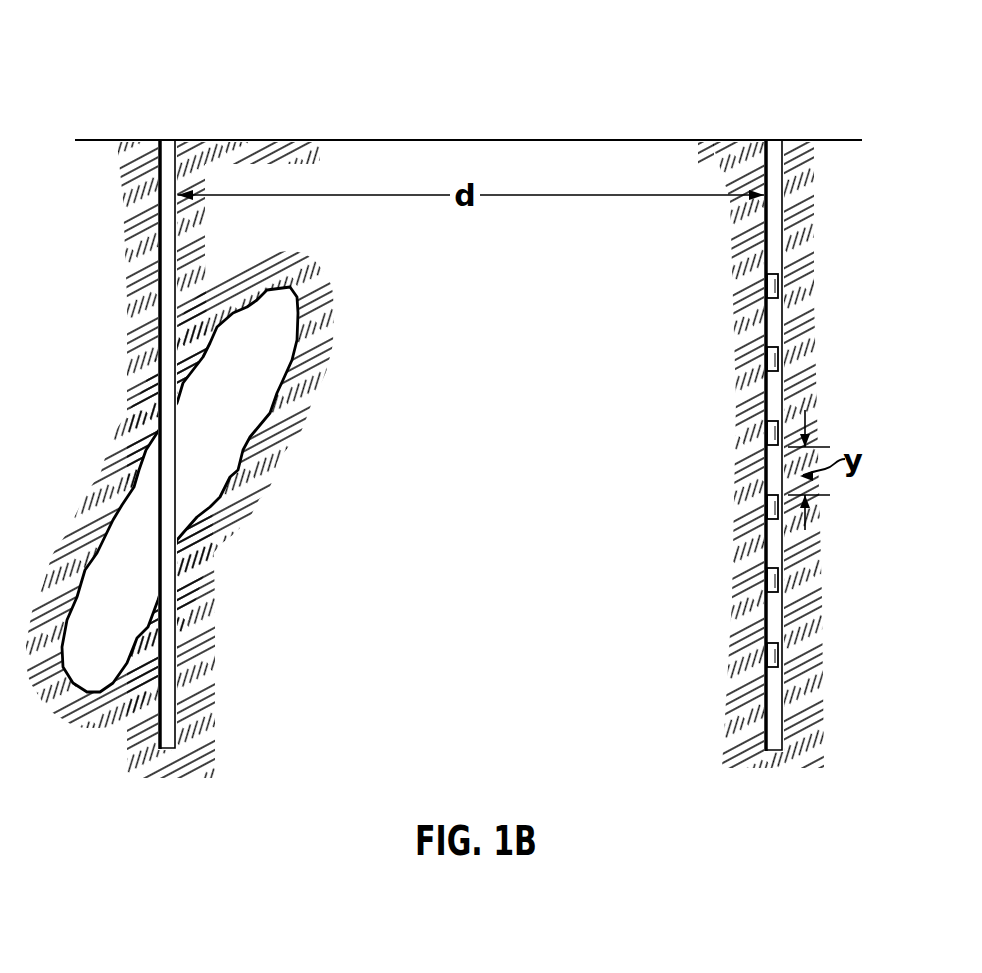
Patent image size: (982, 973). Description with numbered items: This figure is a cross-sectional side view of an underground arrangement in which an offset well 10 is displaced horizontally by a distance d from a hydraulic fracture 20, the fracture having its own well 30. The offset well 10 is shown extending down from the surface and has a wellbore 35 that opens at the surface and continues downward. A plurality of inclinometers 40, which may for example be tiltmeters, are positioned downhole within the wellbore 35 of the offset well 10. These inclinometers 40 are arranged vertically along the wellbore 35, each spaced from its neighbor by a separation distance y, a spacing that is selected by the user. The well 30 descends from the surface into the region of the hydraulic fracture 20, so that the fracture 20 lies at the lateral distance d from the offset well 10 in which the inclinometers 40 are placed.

The offset well 10 is at (788, 217).
The hydraulic fracture 20 is at (220, 430).
The well 30 is at (158, 267).
The wellbore 35 is at (771, 166).
The inclinometers 40 is at (765, 289).